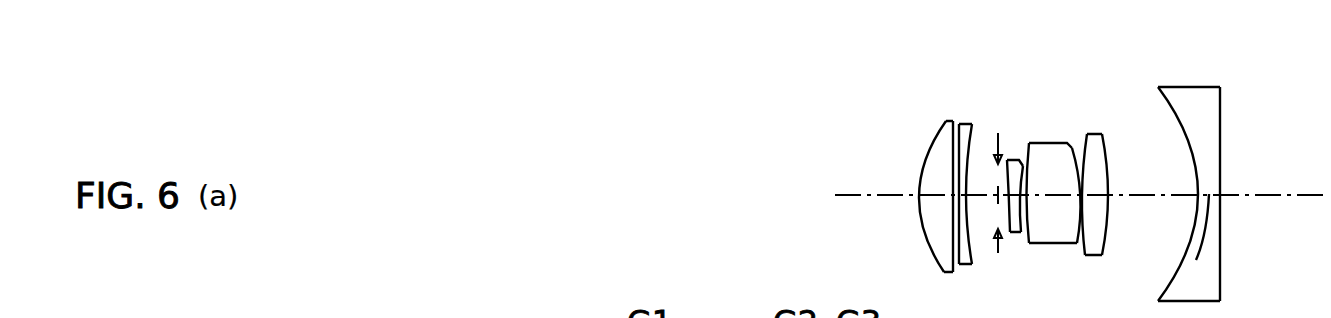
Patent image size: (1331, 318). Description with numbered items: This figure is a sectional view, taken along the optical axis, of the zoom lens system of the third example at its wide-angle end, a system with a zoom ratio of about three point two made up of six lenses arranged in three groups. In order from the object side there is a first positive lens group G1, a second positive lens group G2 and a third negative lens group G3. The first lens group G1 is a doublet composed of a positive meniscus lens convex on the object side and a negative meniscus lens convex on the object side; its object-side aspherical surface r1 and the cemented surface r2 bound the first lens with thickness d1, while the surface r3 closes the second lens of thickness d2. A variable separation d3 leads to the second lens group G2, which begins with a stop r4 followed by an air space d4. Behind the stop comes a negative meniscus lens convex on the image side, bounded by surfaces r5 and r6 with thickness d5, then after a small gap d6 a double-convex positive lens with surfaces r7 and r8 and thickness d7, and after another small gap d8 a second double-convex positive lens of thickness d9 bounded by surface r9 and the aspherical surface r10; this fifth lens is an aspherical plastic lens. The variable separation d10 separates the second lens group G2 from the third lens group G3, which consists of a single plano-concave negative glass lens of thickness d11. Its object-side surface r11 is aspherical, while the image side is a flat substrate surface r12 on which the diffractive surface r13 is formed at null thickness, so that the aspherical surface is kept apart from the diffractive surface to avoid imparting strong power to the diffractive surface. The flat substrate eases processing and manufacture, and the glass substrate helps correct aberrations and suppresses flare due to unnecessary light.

The first positive lens group G1 is at (972, 45).
The second positive lens group G2 is at (1102, 45).
The third negative lens group G3 is at (1218, 45).
The radius of curvature of first lens surface r1 is at (932, 140).
The radius of curvature of second lens surface r2 is at (946, 121).
The radius of curvature of third lens surface r3 is at (974, 128).
The stop r4 is at (993, 172).
The radius of curvature of fifth lens surface r5 is at (1006, 162).
The radius of curvature of sixth lens surface r6 is at (1022, 156).
The radius of curvature of seventh lens surface r7 is at (1030, 152).
The radius of curvature of eighth lens surface r8 is at (1065, 142).
The radius of curvature of ninth lens surface r9 is at (1083, 150).
The radius of curvature of tenth lens surface r10 is at (1108, 150).
The radius of curvature of eleventh lens surface r11 is at (1170, 108).
The radius of curvature of twelfth lens surface r12 is at (1242, 152).
The diffractive surface r13 is at (1220, 108).
The separation between adjacent lens surfaces d1 is at (930, 220).
The separation between adjacent lens surfaces d2 is at (960, 268).
The separation between adjacent lens surfaces d3 is at (985, 210).
The separation between adjacent lens surfaces d4 is at (1010, 237).
The separation between adjacent lens surfaces d5 is at (1019, 236).
The separation between adjacent lens surfaces d6 is at (1029, 245).
The separation between adjacent lens surfaces d7 is at (1054, 146).
The separation between adjacent lens surfaces d8 is at (1080, 197).
The separation between adjacent lens surfaces d9 is at (1105, 250).
The separation between adjacent lens surfaces d10 is at (1153, 210).
The separation between adjacent lens surfaces d11 is at (1191, 256).